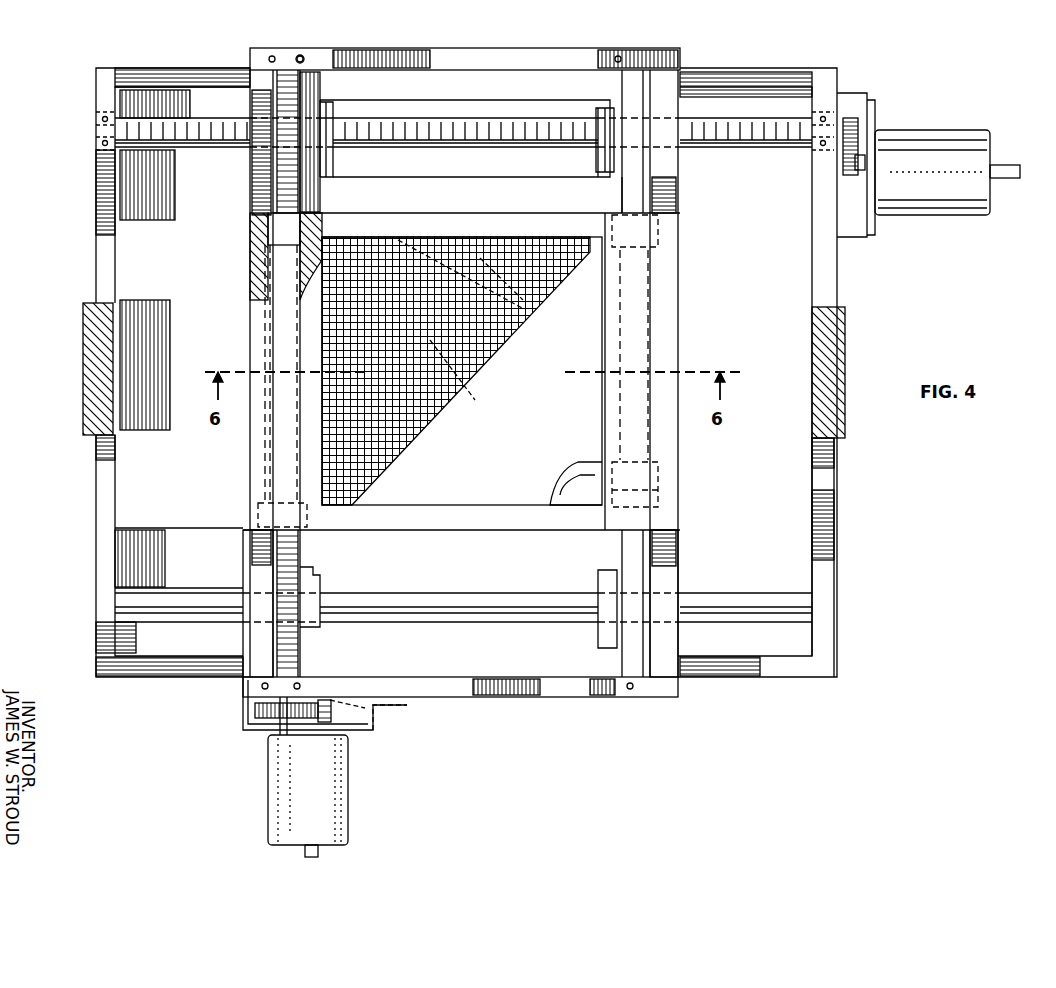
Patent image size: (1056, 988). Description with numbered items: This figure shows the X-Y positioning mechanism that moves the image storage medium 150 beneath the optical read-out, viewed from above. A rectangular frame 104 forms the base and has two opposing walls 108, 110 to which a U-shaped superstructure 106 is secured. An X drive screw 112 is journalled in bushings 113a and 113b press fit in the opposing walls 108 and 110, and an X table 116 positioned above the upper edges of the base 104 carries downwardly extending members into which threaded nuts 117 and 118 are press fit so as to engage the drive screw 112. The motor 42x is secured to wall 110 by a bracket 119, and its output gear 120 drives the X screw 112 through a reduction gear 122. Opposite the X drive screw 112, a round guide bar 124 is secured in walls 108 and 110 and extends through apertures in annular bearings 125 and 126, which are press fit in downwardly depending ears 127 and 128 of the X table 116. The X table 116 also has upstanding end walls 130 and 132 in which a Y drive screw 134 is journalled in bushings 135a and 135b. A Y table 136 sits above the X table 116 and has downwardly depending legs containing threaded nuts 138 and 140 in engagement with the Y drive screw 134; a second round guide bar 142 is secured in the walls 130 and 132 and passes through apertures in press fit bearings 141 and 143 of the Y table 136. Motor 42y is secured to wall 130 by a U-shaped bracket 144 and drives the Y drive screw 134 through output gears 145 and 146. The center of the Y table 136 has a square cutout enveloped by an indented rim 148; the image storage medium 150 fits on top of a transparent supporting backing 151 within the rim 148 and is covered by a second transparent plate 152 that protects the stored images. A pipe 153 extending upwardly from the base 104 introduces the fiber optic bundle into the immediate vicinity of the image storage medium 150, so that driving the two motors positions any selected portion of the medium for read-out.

The motor 42x is at (945, 145).
The motor 42y is at (310, 803).
The rectangular frame 104 is at (765, 679).
The U-shaped superstructure 106 is at (835, 338).
The wall 108 is at (96, 500).
The wall 110 is at (820, 505).
The X drive screw 112 is at (715, 150).
The bushing 113a is at (100, 112).
The bushing 113b is at (818, 166).
The X table 116 is at (552, 88).
The threaded nut 117 is at (596, 158).
The threaded nut 118 is at (336, 160).
The bracket 119 is at (871, 237).
The output gear 120 is at (865, 163).
The reduction gear 122 is at (858, 125).
The round guide bar 124 is at (720, 610).
The annular bearing 125 is at (660, 628).
The annular bearing 126 is at (262, 628).
The downwardly depending ear 127 is at (605, 628).
The downwardly depending ear 128 is at (385, 637).
The upstanding end wall 130 is at (455, 697).
The upstanding end wall 132 is at (488, 55).
The Y drive screw 134 is at (300, 187).
The bushing 135a is at (380, 714).
The bushing 135b is at (306, 54).
The Y table 136 is at (684, 300).
The threaded nut 138 is at (258, 508).
The threaded nut 140 is at (283, 228).
The press fit bearing 141 is at (660, 505).
The round guide bar 142 is at (630, 110).
The press fit bearing 143 is at (660, 235).
The U-shaped bracket 144 is at (246, 700).
The output gear 145 is at (332, 720).
The output gear 146 is at (258, 716).
The indented rim 148 is at (576, 507).
The image storage medium 150 is at (445, 260).
The transparent supporting backing 151 is at (578, 478).
The second transparent plate 152 is at (514, 442).
The pipe 153 is at (485, 388).